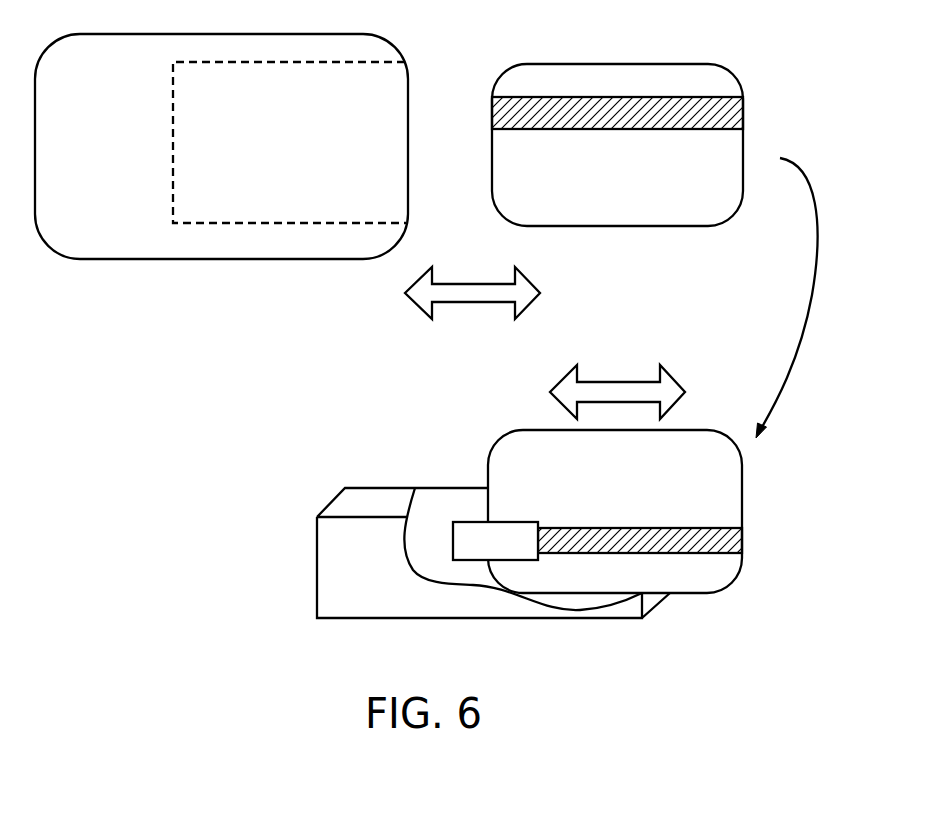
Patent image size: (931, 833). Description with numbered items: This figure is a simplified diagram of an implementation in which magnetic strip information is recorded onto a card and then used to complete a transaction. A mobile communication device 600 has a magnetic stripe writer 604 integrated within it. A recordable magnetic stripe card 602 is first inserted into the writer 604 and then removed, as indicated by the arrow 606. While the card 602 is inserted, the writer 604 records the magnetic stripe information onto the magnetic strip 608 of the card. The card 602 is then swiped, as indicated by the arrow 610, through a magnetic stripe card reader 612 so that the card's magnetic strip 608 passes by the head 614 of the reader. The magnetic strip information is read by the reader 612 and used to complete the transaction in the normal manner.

The mobile communication device 600 is at (103, 76).
The recordable magnetic stripe card 602 is at (708, 217).
The magnetic stripe writer 604 is at (303, 212).
The arrow 606 is at (477, 300).
The magnetic strip 608 is at (703, 107).
The arrow 610 is at (608, 382).
The magnetic stripe card reader 612 is at (363, 616).
The head 614 is at (515, 552).